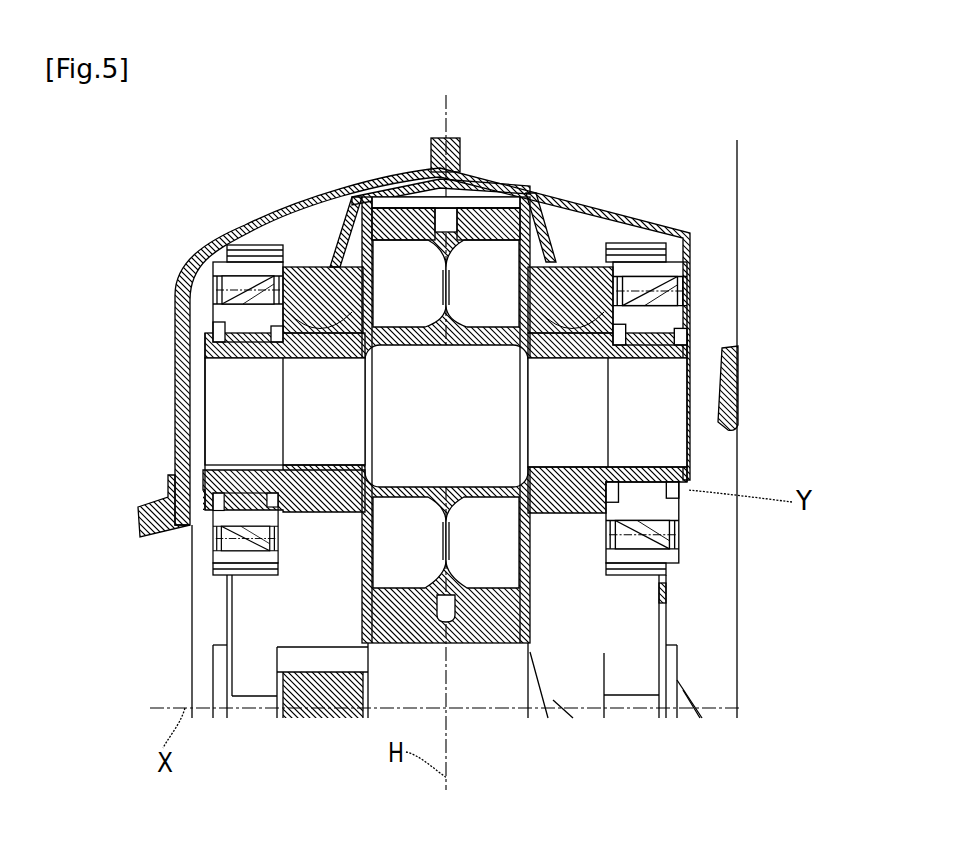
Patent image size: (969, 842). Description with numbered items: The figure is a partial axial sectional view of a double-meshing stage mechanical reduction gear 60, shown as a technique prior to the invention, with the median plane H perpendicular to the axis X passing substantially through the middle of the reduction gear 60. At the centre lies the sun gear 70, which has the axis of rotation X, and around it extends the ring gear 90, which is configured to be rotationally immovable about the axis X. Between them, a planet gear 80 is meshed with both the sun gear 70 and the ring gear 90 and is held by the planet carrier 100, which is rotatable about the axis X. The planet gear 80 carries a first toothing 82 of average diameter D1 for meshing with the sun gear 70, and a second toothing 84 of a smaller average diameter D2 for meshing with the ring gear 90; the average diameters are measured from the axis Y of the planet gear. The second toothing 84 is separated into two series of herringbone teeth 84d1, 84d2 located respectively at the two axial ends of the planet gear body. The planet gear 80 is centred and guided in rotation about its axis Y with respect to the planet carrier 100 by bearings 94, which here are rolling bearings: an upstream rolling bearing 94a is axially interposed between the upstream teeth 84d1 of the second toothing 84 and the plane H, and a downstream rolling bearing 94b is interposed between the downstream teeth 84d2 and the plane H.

The reduction gear 60 is at (771, 385).
The sun gear 70 is at (417, 647).
The planet gear 80 is at (318, 465).
The first toothing 82 is at (407, 212).
The ring gear 90 is at (568, 318).
The second toothing 84 is at (484, 359).
The upstream teeth 84d1 is at (316, 490).
The downstream teeth 84d2 is at (553, 513).
The bearings 94 is at (484, 541).
The upstream rolling bearing 94a is at (215, 300).
The downstream rolling bearing 94b is at (700, 307).
The planet carrier 100 is at (660, 585).